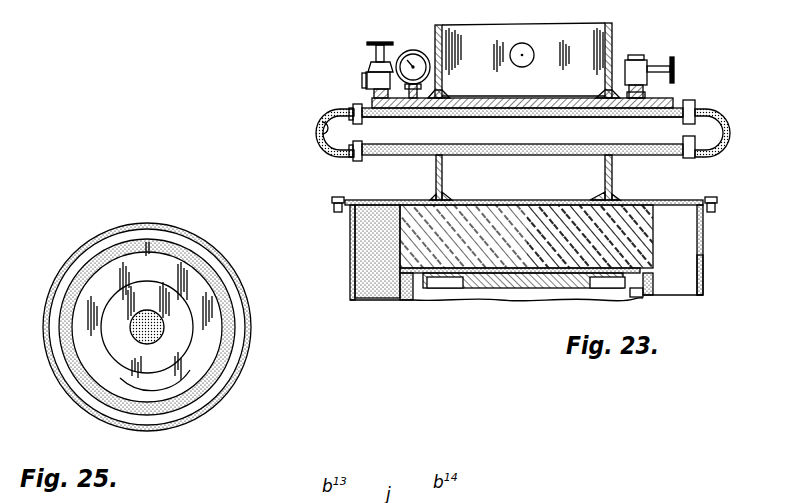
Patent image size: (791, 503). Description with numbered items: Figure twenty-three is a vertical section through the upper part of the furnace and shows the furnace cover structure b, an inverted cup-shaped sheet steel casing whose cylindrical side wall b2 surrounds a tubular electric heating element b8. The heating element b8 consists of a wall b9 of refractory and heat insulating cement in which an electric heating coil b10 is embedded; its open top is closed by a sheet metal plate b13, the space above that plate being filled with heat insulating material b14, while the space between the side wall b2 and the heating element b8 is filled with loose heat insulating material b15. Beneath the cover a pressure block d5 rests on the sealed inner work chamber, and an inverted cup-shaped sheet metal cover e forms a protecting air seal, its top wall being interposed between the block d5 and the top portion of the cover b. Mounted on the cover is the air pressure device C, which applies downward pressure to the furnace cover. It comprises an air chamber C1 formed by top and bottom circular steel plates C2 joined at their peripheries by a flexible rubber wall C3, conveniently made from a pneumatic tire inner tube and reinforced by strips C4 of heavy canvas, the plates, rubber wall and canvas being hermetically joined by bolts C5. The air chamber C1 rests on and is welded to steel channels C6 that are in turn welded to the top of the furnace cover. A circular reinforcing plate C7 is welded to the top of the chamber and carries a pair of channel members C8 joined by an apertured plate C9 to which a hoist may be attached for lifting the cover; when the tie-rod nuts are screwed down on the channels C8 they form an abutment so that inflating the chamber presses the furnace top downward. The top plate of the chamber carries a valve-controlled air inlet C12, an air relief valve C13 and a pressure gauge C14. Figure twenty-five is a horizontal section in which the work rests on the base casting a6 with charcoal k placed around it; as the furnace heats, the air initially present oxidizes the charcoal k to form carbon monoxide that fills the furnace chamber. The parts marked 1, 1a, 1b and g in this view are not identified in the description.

In FIG. 23, the air pressure device C is at (700, 94).
In FIG. 23, the air chamber C1 is at (730, 116).
In FIG. 23, the circular steel plates C2 is at (527, 98).
In FIG. 23, the flexible rubber wall C3 is at (318, 138).
In FIG. 23, the canvas strips C4 is at (318, 118).
In FIG. 23, the bolts C5 is at (353, 106).
In FIG. 23, the steel channels C6 is at (436, 176).
In FIG. 23, the circular reinforcing plate C7 is at (572, 98).
In FIG. 23, the channel members C8 is at (437, 26).
In FIG. 23, the apertured plate C9 is at (546, 26).
In FIG. 23, the valve-controlled air inlet C12 is at (648, 58).
In FIG. 23, the air relief valve C13 is at (372, 62).
In FIG. 23, the pressure gauge C14 is at (412, 50).
In FIG. 23, the furnace cover structure b is at (712, 234).
In FIG. 23, the cylindrical side wall b2 is at (703, 280).
In FIG. 23, the tubular electric heating element b8 is at (413, 298).
In FIG. 23, the refractory cement wall b9 is at (652, 292).
In FIG. 23, the electric heating coil b10 is at (636, 296).
In FIG. 23, the sheet metal plate b13 is at (492, 264).
In FIG. 23, the heat insulating material b14 is at (545, 236).
In FIG. 23, the loose heat insulating material b15 is at (360, 252).
In FIG. 23, the pressure block d5 is at (540, 288).
In FIG. 23, the protecting cover e is at (432, 290).
In FIG. 25, the protecting cover e is at (238, 372).
In FIG. 25, the inner ring 1 is at (200, 289).
In FIG. 25, the core 1a is at (152, 330).
In FIG. 25, the shading lines 1b is at (190, 332).
In FIG. 25, the base casting a6 is at (237, 318).
In FIG. 25, the lining ring g is at (110, 376).
In FIG. 25, the charcoal k is at (142, 332).